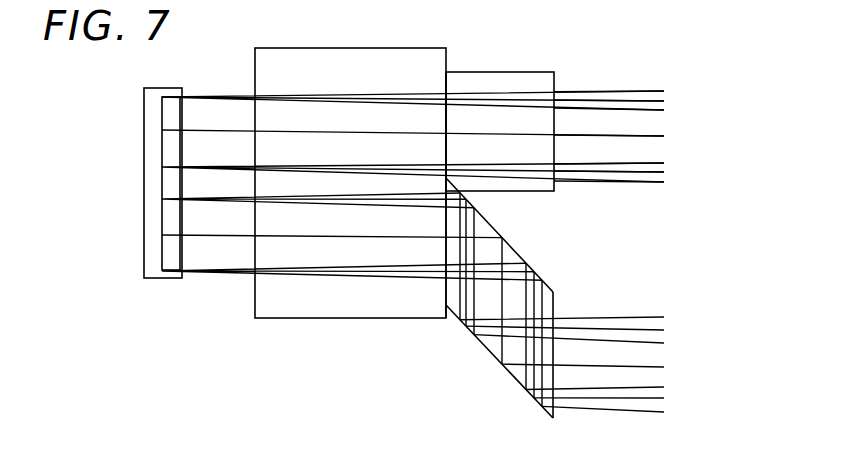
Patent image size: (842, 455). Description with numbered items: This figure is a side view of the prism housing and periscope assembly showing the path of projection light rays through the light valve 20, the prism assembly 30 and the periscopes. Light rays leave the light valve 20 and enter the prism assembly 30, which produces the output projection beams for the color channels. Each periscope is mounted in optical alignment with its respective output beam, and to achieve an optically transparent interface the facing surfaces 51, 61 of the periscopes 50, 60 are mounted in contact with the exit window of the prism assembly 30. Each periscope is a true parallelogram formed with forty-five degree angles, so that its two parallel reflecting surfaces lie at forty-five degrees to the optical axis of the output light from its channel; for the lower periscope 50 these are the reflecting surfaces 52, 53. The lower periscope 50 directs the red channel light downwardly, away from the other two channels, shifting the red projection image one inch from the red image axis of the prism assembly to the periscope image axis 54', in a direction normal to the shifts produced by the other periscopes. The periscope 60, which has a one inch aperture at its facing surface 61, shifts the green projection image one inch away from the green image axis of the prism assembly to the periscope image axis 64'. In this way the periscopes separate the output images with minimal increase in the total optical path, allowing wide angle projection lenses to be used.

The light valve 20 is at (145, 105).
The prism assembly 30 is at (268, 320).
The lower periscope 50 is at (487, 300).
The facing surface 51 is at (448, 298).
The reflecting surface 52 is at (517, 249).
The reflecting surface 53 is at (512, 369).
The periscope image axis 54' is at (585, 364).
The periscope 60 is at (518, 73).
The facing surface 61 is at (449, 81).
The periscope image axis 64' is at (637, 136).